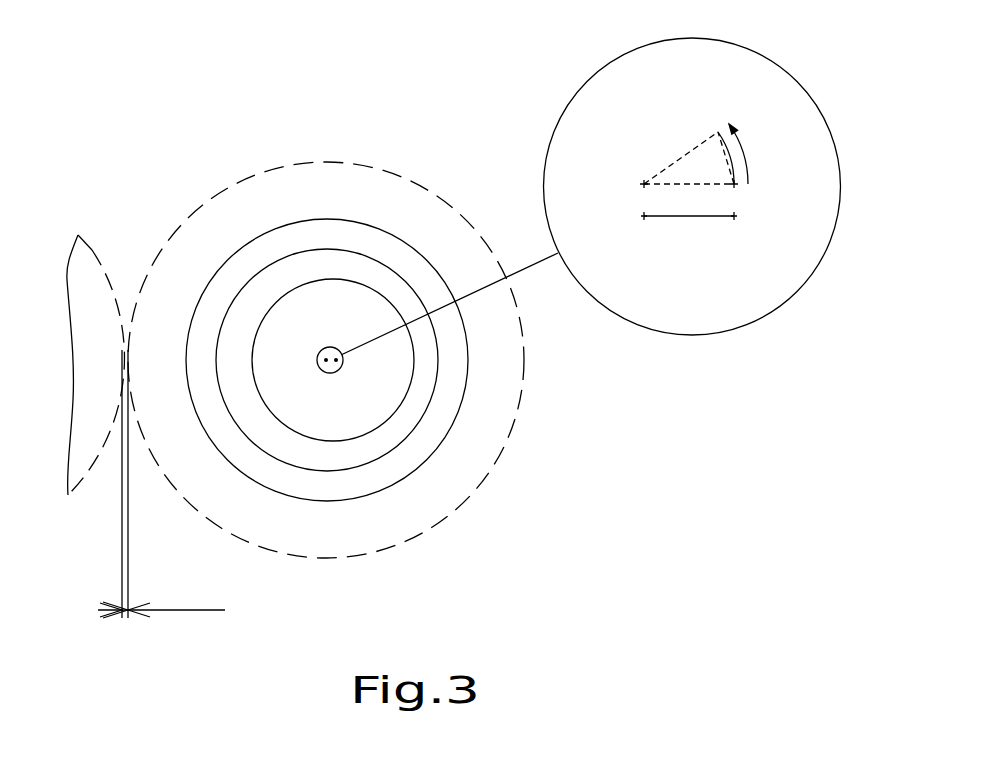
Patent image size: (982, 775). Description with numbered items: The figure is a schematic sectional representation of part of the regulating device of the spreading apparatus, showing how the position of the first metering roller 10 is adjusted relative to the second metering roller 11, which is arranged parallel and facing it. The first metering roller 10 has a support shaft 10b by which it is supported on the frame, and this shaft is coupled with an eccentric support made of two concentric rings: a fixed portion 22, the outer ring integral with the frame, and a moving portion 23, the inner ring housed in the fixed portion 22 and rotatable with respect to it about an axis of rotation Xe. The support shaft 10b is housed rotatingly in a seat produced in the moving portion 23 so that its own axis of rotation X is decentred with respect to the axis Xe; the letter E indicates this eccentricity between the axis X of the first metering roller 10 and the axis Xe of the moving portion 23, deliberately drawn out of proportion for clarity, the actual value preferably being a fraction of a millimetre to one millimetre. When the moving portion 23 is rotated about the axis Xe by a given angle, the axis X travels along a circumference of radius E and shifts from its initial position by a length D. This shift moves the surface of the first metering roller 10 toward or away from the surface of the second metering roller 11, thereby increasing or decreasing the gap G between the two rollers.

The first metering roller 10 is at (330, 162).
The support shaft 10b is at (360, 323).
The second metering roller 11 is at (93, 248).
The fixed portion 22 is at (375, 470).
The moving portion 23 is at (322, 455).
The axis of rotation X is at (336, 362).
The axis of rotation Xe is at (326, 362).
The length D is at (715, 155).
The eccentricity E is at (689, 211).
The gap G is at (161, 484).